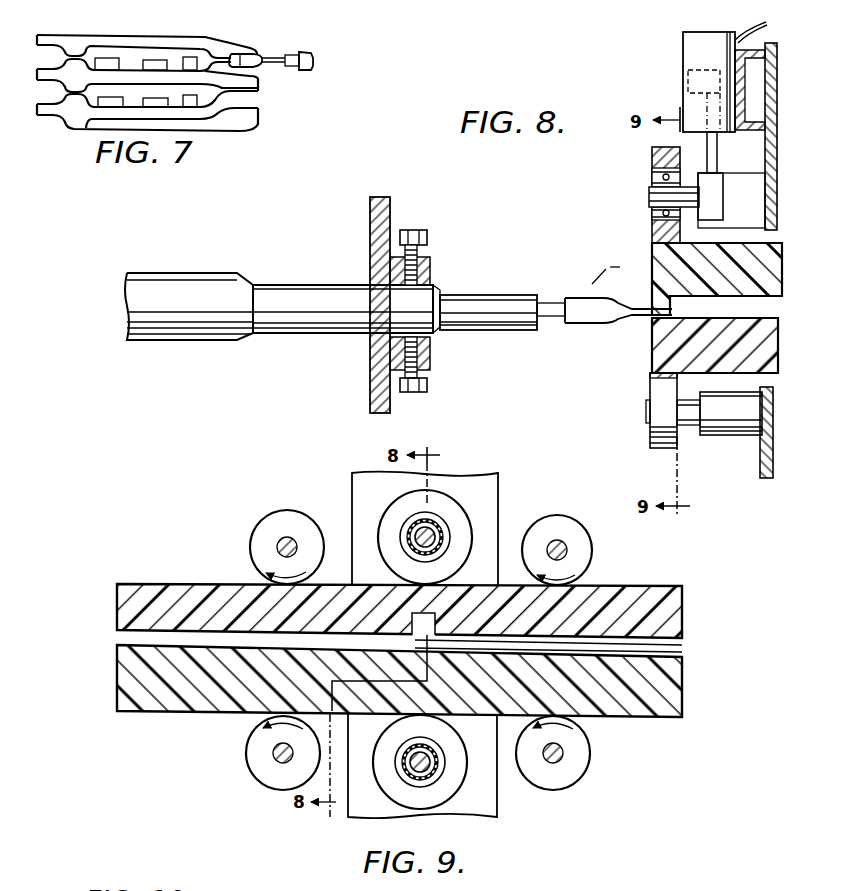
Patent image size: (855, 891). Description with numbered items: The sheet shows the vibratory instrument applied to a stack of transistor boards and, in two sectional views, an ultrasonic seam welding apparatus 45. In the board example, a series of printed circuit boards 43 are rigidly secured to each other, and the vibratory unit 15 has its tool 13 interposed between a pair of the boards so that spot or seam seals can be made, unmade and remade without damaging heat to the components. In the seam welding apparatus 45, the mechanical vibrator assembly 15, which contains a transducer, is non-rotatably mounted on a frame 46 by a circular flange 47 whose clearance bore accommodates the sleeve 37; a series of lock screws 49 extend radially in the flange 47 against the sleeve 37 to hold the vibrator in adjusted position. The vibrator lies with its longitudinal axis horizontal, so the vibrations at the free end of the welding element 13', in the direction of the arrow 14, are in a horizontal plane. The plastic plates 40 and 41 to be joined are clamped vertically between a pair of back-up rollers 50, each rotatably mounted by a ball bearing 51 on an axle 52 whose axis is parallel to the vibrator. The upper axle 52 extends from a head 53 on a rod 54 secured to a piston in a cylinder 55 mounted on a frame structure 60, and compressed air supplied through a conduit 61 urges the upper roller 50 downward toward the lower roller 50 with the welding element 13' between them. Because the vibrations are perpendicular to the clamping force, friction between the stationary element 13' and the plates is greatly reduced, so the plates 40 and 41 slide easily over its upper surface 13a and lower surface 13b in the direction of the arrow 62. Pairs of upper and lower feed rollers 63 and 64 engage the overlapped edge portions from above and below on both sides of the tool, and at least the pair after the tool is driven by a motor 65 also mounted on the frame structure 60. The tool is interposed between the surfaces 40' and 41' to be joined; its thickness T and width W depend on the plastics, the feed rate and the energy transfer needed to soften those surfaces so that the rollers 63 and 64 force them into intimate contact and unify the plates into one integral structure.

In FIG. 7, the tool 13 is at (272, 44).
In FIG. 8, the welding element 13' is at (618, 331).
In FIG. 8, the upper surface 13a is at (634, 304).
In FIG. 8, the lower surface 13b is at (643, 318).
In FIG. 8, the arrow 14 is at (613, 288).
In FIG. 7, the mechanical vibrator assembly 15 is at (314, 55).
In FIG. 8, the mechanical vibrator assembly 15 is at (288, 282).
In FIG. 8, the sleeve 37 is at (316, 334).
In FIG. 8, the plastic plate 40 is at (689, 368).
In FIG. 9, the surface of plate 40' is at (399, 691).
In FIG. 8, the plastic plate 41 is at (700, 266).
In FIG. 9, the surface of plate 41' is at (399, 679).
In FIG. 7, the transistor boards 43 is at (240, 46).
In FIG. 8, the ultrasonic seam welding apparatus 45 is at (500, 208).
In FIG. 9, the ultrasonic seam welding apparatus 45 is at (241, 522).
In FIG. 8, the frame 46 is at (388, 208).
In FIG. 8, the circular flange 47 is at (432, 272).
In FIG. 8, the lock screws 49 is at (427, 236).
In FIG. 8, the back-up rollers 50 is at (652, 152).
In FIG. 9, the back-up rollers 50 is at (467, 506).
In FIG. 8, the ball bearing 51 is at (652, 177).
In FIG. 9, the ball bearing 51 is at (447, 535).
In FIG. 8, the axle 52 is at (649, 198).
In FIG. 9, the axle 52 is at (429, 530).
In FIG. 8, the head 53 is at (723, 209).
In FIG. 8, the rod 54 is at (717, 160).
In FIG. 8, the cylinder 55 is at (683, 50).
In FIG. 8, the frame structure 60 is at (771, 121).
In FIG. 8, the conduit 61 is at (768, 26).
In FIG. 9, the arrow 62 is at (142, 572).
In FIG. 9, the upper feed rollers 63 is at (318, 509).
In FIG. 8, the lower feed rollers 64 is at (650, 435).
In FIG. 9, the lower feed rollers 64 is at (247, 758).
In FIG. 8, the motor 65 is at (730, 431).
In FIG. 9, the width W is at (388, 617).
In FIG. 9, the thickness T is at (463, 625).